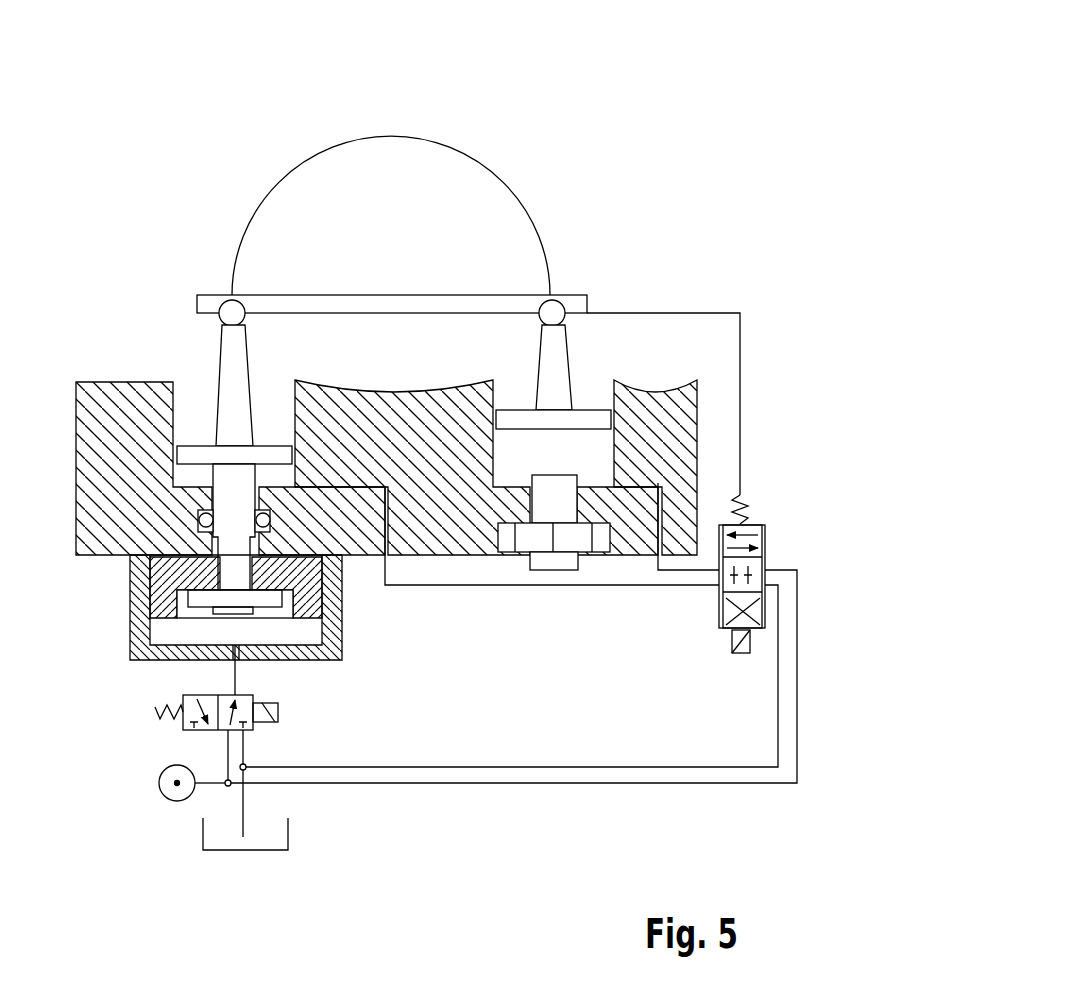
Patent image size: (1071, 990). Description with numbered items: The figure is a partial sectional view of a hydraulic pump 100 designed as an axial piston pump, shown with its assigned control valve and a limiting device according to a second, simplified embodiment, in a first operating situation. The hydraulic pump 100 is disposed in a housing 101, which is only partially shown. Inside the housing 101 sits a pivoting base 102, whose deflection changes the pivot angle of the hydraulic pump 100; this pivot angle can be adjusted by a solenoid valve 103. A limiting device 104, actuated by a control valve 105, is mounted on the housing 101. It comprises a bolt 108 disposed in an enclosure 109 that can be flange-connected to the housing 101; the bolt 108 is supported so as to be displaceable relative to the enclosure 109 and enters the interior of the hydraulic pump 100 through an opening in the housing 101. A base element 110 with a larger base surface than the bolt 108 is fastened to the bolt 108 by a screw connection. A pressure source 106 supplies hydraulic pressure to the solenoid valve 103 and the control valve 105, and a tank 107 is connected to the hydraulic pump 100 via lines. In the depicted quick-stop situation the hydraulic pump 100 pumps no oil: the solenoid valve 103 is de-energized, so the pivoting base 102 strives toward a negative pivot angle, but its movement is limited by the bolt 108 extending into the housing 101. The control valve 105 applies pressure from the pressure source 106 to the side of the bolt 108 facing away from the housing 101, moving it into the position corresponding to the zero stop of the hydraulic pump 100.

The hydraulic pump 100 is at (681, 96).
The housing 101 is at (110, 413).
The pivoting base 102 is at (542, 237).
The solenoid valve 103 is at (765, 540).
The limiting device 104 is at (244, 641).
The control valve 105 is at (248, 694).
The pressure source 106 is at (158, 783).
The tank 107 is at (290, 833).
The bolt 108 is at (228, 473).
The enclosure 109 is at (143, 628).
The base element 110 is at (165, 615).